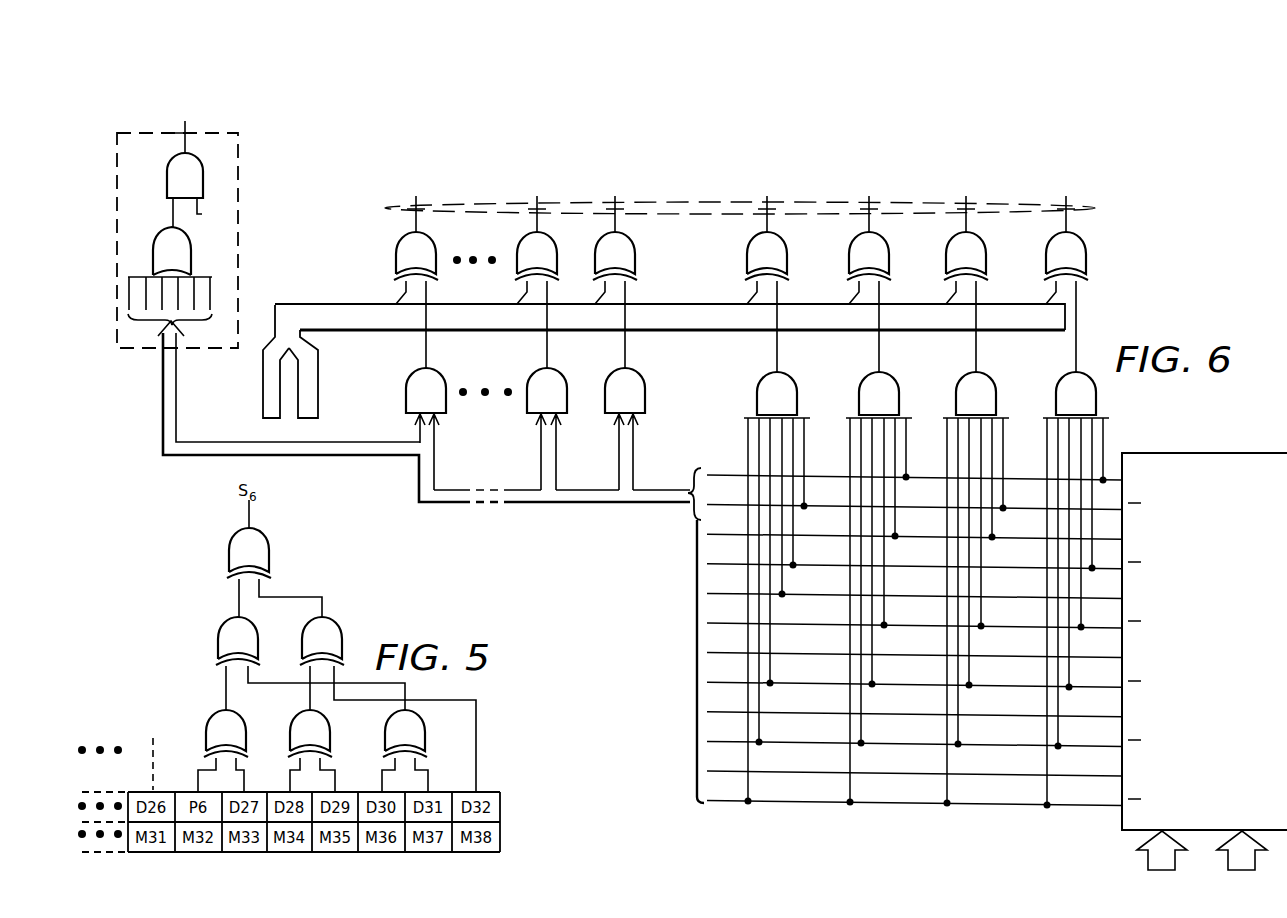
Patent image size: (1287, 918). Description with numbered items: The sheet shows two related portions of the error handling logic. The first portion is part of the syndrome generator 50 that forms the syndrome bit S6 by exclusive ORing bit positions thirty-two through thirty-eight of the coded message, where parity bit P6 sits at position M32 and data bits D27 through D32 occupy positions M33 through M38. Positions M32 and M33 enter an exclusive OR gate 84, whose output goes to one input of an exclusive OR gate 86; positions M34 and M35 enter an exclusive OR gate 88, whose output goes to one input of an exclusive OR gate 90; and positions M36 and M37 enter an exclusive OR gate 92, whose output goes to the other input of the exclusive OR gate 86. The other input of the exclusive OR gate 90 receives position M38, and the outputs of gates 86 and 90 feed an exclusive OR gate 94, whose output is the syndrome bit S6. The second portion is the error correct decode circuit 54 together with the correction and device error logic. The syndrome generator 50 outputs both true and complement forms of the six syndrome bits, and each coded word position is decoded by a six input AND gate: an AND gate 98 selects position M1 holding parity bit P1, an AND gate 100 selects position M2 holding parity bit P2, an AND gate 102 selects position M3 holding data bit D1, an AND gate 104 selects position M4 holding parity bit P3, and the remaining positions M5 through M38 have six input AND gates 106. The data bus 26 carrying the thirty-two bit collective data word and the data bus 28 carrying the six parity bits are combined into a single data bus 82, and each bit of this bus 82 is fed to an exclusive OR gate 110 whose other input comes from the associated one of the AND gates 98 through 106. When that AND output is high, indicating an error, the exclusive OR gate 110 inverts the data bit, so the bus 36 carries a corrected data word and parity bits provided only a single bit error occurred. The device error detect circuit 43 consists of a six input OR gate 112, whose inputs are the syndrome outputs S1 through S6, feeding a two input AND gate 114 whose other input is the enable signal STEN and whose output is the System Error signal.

In FIG. 6, the data bus 26 is at (262, 402).
In FIG. 6, the data bus 28 is at (318, 405).
In FIG. 6, the bus 36 is at (1102, 215).
In FIG. 6, the device error detect circuit 43 is at (249, 272).
In FIG. 6, the syndrome generator 50 is at (1225, 732).
In FIG. 6, the error correct decode circuit 54 is at (1160, 292).
In FIG. 6, the data bus 82 is at (655, 307).
In FIG. 5, the exclusive OR gate 84 is at (208, 726).
In FIG. 5, the exclusive OR gate 86 is at (229, 642).
In FIG. 5, the exclusive OR gate 88 is at (299, 726).
In FIG. 5, the exclusive OR gate 90 is at (314, 642).
In FIG. 5, the exclusive OR gate 92 is at (389, 726).
In FIG. 5, the exclusive OR gate 94 is at (247, 540).
In FIG. 6, the AND gate 98 is at (1066, 385).
In FIG. 6, the AND gate 100 is at (968, 385).
In FIG. 6, the AND gate 102 is at (866, 385).
In FIG. 6, the AND gate 104 is at (760, 385).
In FIG. 6, the AND gate 106 is at (406, 390).
In FIG. 6, the exclusive OR gate 110 is at (404, 248).
In FIG. 6, the OR gate 112 is at (190, 254).
In FIG. 6, the AND gate 114 is at (167, 190).